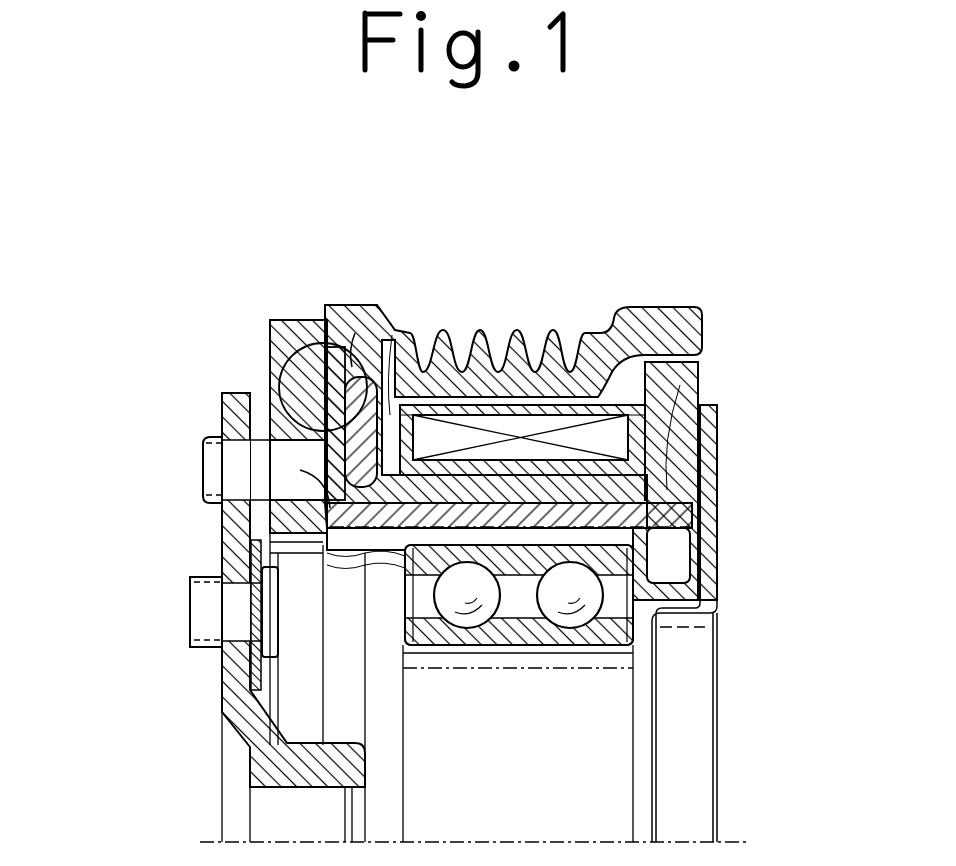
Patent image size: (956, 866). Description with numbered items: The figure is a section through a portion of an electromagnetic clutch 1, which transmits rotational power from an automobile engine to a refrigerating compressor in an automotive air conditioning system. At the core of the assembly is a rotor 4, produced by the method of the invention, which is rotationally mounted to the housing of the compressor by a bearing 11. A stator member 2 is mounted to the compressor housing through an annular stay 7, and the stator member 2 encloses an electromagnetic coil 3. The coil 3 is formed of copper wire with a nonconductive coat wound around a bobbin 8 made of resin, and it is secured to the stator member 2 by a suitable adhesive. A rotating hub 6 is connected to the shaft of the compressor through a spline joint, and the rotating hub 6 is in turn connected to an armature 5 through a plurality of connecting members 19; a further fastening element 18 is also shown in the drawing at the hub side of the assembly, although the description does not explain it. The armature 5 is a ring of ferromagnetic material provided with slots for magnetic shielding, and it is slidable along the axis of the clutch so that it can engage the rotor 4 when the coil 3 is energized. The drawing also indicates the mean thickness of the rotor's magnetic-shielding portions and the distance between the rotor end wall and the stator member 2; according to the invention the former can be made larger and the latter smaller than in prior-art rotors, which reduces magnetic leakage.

The electromagnetic clutch 1 is at (214, 218).
The stator member 2 is at (695, 397).
The electromagnetic coil 3 is at (606, 437).
The rotor 4 is at (325, 300).
The armature 5 is at (277, 350).
The rotating hub 6 is at (228, 710).
The annular stay 7 is at (711, 537).
The bobbin 8 is at (644, 447).
The bearing 11 is at (573, 622).
The bolt 18 is at (273, 458).
The connecting members 19 is at (257, 673).